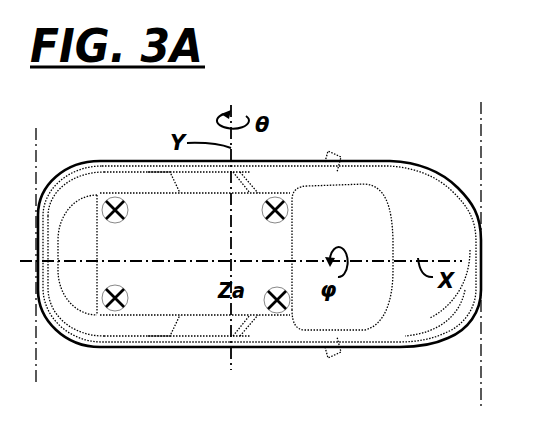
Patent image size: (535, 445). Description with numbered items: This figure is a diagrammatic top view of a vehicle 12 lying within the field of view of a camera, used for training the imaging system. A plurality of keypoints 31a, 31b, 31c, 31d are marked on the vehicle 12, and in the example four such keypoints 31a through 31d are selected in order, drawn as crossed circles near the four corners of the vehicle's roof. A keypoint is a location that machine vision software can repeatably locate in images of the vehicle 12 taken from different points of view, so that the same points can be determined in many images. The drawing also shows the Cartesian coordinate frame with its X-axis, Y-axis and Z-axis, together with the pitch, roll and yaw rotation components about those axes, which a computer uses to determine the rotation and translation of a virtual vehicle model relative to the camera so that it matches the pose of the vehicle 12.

The vehicle 12 is at (396, 146).
The keypoint 31a is at (118, 197).
The keypoint 31b is at (278, 197).
The keypoint 31c is at (287, 308).
The keypoint 31d is at (107, 302).